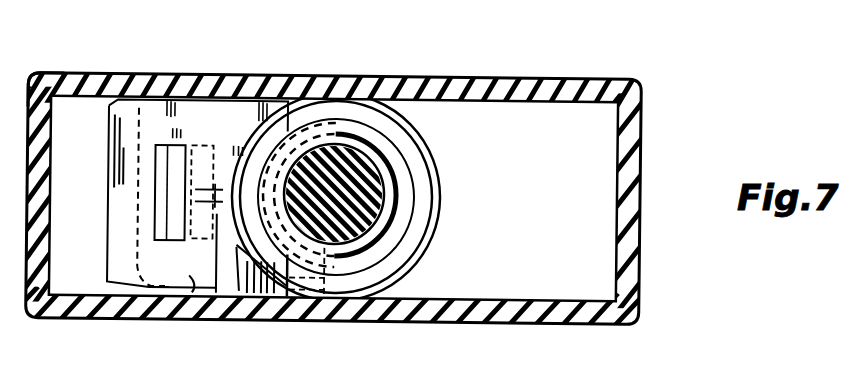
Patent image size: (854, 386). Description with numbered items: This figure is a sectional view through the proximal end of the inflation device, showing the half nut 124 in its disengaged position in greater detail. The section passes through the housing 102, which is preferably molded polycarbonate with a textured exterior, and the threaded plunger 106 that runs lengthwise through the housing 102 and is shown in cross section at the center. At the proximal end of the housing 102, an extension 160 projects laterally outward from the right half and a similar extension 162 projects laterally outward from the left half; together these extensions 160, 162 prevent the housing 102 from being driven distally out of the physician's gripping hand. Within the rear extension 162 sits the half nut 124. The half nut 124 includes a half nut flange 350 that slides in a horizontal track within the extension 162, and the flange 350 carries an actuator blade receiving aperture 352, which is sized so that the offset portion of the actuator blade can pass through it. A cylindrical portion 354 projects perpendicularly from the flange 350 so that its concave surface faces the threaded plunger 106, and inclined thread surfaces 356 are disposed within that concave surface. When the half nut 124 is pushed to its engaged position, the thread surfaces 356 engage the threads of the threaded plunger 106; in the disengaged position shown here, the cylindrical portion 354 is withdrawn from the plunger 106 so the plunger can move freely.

The housing 102 is at (343, 78).
The threaded plunger 106 is at (384, 192).
The half nut 124 is at (110, 236).
The extension 160 is at (621, 81).
The extension 162 is at (30, 76).
The half nut flange 350 is at (193, 284).
The actuator blade receiving aperture 352 is at (177, 233).
The cylindrical portion 354 is at (262, 291).
The inclined thread surfaces 356 is at (291, 297).